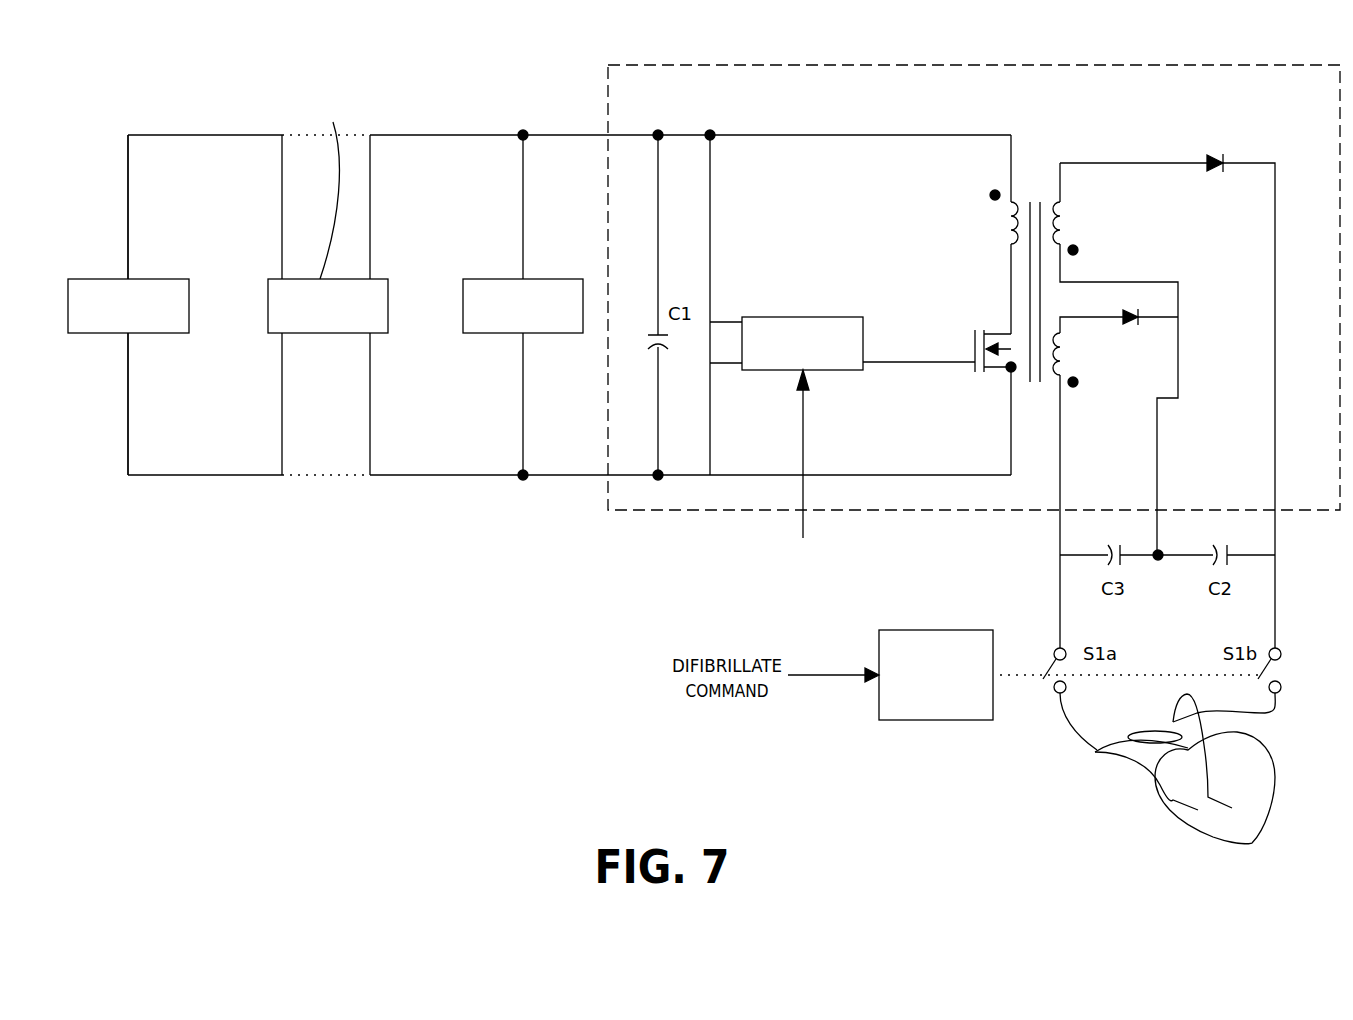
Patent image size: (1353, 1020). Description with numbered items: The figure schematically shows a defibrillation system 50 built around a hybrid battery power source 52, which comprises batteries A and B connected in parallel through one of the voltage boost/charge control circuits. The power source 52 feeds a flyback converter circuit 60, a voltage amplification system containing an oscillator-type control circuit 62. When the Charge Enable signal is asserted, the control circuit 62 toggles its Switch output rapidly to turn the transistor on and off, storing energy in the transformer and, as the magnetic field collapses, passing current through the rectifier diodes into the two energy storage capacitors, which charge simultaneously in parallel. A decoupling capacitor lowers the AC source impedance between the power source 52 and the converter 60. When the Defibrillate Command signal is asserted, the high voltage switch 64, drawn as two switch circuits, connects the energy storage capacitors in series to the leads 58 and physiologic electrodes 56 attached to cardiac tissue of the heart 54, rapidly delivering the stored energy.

The defibrillation system 50 is at (557, 635).
The hybrid battery power source 52 is at (297, 66).
The heart 54 is at (1157, 787).
The physiologic electrodes 56 is at (1195, 820).
The leads 58 is at (1129, 751).
The flyback converter circuit 60 is at (872, 65).
The control circuit 62 is at (833, 317).
The high voltage switch 64 is at (930, 630).